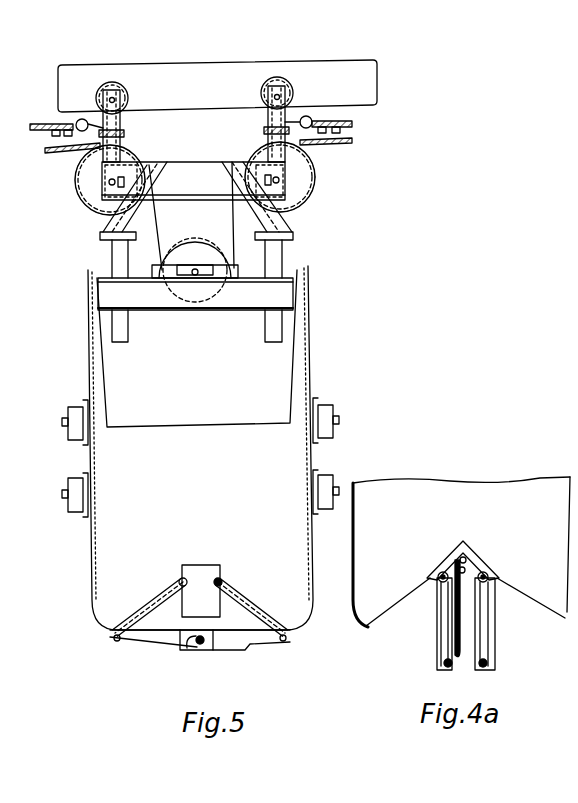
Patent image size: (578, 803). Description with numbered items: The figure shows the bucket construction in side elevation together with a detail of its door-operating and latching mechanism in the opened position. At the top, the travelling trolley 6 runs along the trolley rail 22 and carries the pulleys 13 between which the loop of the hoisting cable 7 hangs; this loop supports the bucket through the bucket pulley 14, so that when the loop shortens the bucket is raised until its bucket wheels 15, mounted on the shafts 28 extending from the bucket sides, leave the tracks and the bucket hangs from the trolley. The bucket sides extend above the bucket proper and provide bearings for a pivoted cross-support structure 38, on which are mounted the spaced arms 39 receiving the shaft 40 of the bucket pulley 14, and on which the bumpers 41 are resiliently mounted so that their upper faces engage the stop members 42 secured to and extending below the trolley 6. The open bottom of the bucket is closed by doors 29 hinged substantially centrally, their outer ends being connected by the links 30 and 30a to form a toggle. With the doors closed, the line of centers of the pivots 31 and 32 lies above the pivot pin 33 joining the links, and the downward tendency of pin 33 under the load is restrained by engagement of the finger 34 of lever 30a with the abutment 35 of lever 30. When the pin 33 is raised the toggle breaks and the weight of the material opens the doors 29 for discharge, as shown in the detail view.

In FIG. 5, the trolley 6 is at (175, 166).
In FIG. 5, the cable 7 is at (58, 150).
In FIG. 5, the pulleys 13 is at (105, 222).
In FIG. 5, the bucket pulley 14 is at (214, 214).
In FIG. 5, the bucket wheels 15 is at (68, 420).
In FIG. 5, the trolley rail 22 is at (250, 72).
In FIG. 5, the shafts 28 is at (76, 515).
In FIG. 5, the doors 29 is at (155, 594).
In FIG. 4A, the doors 29 is at (437, 634).
In FIG. 5, the link 30 is at (160, 640).
In FIG. 4A, the link 30 is at (470, 610).
In FIG. 5, the link 30a is at (267, 644).
In FIG. 5, the pivot 31 is at (114, 642).
In FIG. 4A, the pivot 31 is at (452, 668).
In FIG. 5, the pivot 32 is at (288, 642).
In FIG. 4A, the pivot 32 is at (486, 668).
In FIG. 5, the pivot pin 33 is at (208, 652).
In FIG. 5, the finger 34 is at (188, 646).
In FIG. 4A, the finger 34 is at (470, 558).
In FIG. 5, the abutment 35 is at (198, 645).
In FIG. 4A, the abutment 35 is at (456, 566).
In FIG. 5, the cross-support structure 38 is at (295, 290).
In FIG. 5, the spaced arms 39 is at (172, 280).
In FIG. 5, the shaft 40 is at (197, 278).
In FIG. 5, the bumpers 41 is at (112, 252).
In FIG. 5, the stop members 42 is at (98, 216).